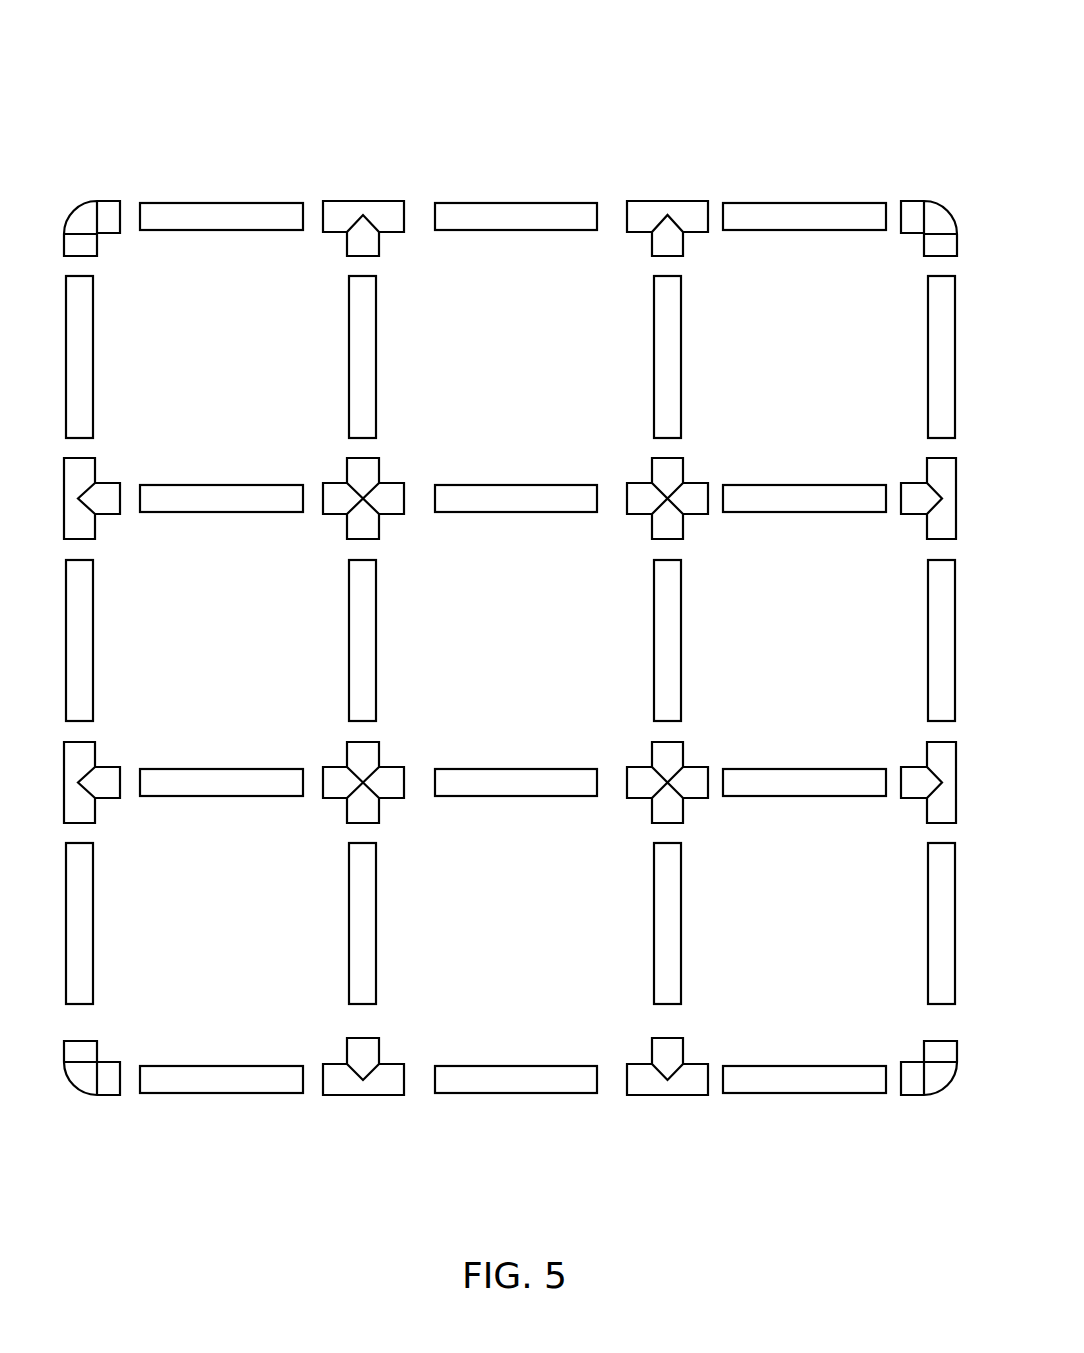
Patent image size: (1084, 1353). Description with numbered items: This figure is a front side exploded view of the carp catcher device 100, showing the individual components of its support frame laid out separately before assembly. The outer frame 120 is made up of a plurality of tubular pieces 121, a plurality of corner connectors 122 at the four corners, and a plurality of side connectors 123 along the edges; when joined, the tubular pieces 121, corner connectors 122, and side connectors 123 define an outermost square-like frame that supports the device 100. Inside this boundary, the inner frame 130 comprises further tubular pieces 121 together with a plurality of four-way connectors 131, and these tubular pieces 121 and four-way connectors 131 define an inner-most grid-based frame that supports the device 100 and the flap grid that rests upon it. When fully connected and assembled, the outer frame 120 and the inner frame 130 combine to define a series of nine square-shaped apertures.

The carp catcher device 100 is at (213, 178).
The outer frame 120 is at (513, 176).
The tubular piece 121 is at (270, 212).
The corner connector 122 is at (87, 223).
The side connector 123 is at (385, 212).
The inner frame 130 is at (312, 631).
The four-way connector 131 is at (366, 512).